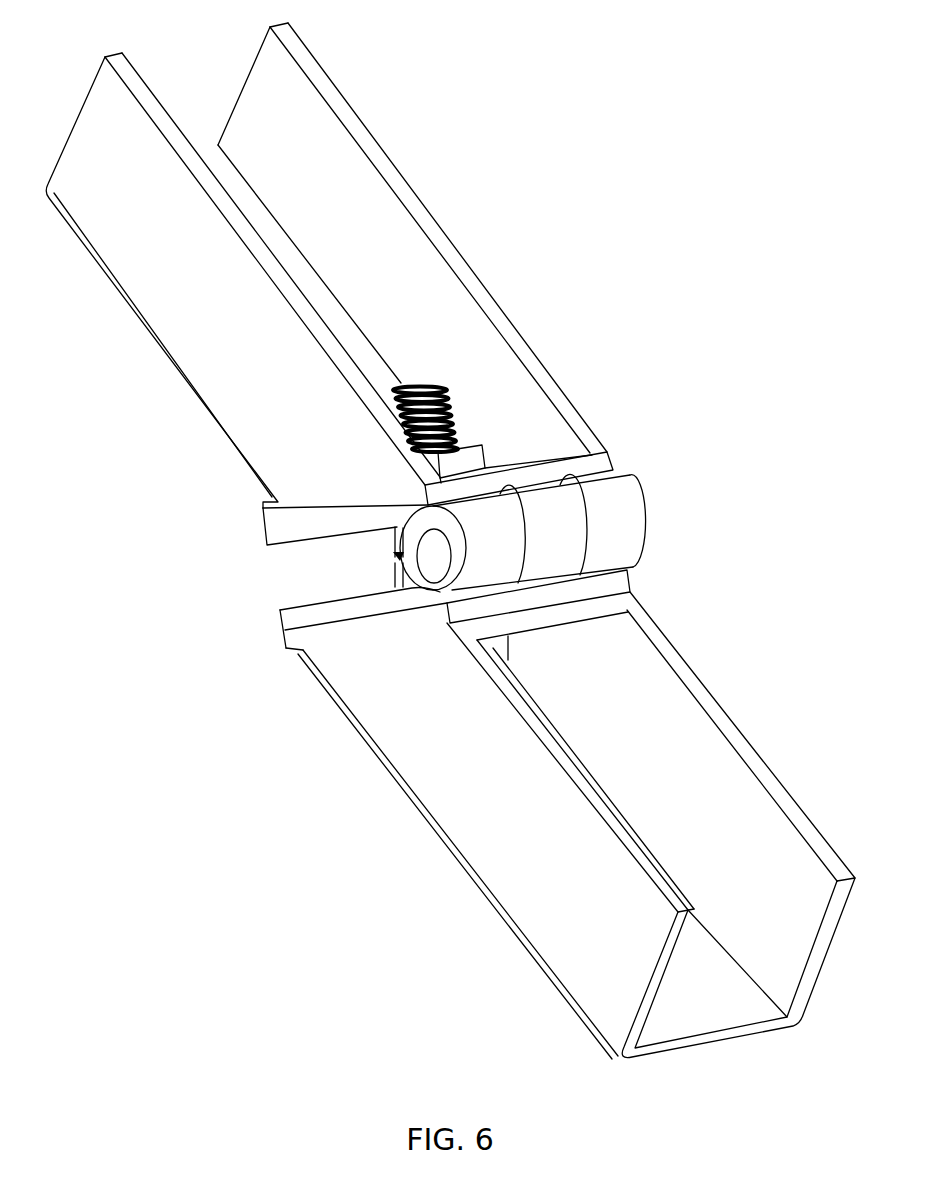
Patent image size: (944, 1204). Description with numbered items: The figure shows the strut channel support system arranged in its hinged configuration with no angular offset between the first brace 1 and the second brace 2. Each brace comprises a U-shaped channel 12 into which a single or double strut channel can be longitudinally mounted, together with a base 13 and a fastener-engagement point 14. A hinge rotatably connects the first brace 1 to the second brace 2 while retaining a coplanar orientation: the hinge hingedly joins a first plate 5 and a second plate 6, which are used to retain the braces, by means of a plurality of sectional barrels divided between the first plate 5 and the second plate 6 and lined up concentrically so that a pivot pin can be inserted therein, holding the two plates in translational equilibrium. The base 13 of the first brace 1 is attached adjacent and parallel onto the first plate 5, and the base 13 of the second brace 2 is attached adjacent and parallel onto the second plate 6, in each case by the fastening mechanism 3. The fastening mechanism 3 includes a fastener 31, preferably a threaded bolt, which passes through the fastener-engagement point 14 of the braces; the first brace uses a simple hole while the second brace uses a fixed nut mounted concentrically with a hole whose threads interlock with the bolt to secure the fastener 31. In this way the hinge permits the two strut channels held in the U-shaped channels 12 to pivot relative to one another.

The first brace 1 is at (201, 302).
The second brace 2 is at (516, 852).
The fastening mechanism 3 is at (447, 390).
The single fastener 31 is at (400, 392).
The first plate 5 is at (266, 525).
The second plate 6 is at (282, 622).
The U-shaped channel 12 is at (212, 158).
The base 13 is at (612, 461).
The fastener-engagement point 14 is at (467, 449).